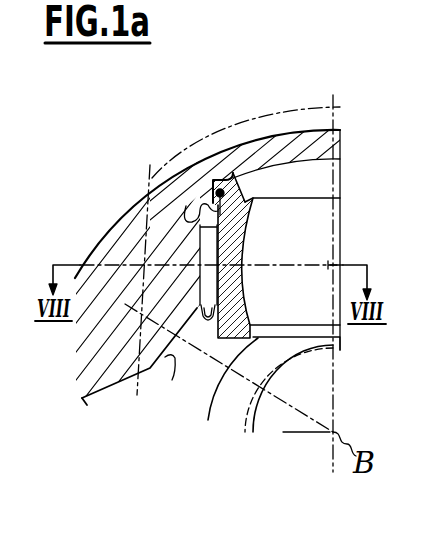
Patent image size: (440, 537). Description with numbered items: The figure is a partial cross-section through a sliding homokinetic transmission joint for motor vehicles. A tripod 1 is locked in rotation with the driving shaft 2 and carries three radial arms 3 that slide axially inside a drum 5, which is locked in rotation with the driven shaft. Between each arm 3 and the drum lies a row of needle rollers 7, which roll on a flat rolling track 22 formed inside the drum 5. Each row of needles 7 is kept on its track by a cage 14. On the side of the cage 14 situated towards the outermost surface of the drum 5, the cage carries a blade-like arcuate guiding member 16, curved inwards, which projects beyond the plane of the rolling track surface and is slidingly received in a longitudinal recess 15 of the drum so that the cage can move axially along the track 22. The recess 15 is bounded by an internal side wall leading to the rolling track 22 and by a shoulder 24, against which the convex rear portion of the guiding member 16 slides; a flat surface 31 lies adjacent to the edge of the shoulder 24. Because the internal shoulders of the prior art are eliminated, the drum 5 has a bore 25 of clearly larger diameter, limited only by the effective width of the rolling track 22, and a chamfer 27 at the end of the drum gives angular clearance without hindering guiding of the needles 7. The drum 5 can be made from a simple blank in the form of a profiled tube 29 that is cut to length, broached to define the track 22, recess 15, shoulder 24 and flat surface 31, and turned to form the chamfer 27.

The tripod 1 is at (219, 428).
The driving shaft 2 is at (261, 420).
The radial arms 3 is at (344, 239).
The drum 5 is at (278, 124).
The needle rollers 7 is at (203, 254).
The cage 14 is at (204, 336).
The recess 15 is at (192, 212).
The guiding member 16 is at (182, 206).
The rolling track 22 is at (240, 245).
The shoulder 24 is at (252, 222).
The bore 25 is at (175, 360).
The chamfer 27 is at (149, 372).
The profiled tube 29 is at (138, 228).
The flat surface 31 is at (234, 180).